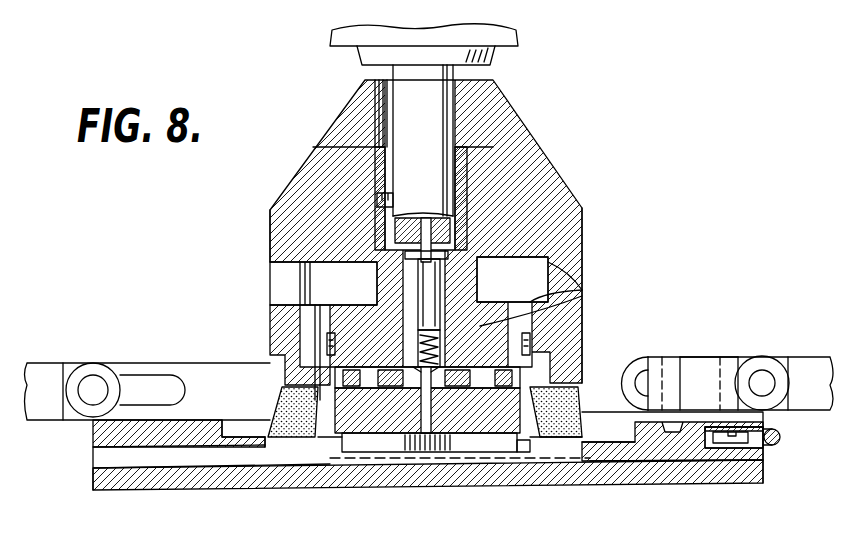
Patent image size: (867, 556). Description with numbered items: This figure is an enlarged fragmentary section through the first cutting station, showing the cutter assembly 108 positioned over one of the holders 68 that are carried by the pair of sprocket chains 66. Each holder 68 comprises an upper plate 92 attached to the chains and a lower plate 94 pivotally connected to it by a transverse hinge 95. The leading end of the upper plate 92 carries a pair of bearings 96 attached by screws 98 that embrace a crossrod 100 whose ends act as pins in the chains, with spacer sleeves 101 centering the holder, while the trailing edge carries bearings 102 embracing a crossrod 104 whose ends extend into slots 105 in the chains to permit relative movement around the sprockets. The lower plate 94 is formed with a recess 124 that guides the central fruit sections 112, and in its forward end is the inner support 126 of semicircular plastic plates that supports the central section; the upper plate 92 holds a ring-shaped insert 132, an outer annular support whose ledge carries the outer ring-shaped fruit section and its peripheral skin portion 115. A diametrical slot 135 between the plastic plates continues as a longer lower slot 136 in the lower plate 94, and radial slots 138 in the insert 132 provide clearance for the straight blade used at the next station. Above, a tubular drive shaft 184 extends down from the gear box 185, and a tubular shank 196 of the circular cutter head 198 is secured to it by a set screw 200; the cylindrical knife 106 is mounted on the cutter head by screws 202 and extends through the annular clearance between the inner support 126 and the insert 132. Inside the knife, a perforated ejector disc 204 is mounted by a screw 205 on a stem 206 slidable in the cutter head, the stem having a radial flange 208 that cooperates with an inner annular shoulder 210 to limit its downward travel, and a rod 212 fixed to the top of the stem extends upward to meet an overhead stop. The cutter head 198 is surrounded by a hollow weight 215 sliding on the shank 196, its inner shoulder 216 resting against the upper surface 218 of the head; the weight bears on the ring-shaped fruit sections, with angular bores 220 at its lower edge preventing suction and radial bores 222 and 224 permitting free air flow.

The sprocket chains 66 is at (42, 372).
The holder 68 is at (631, 452).
The upper plate 92 is at (112, 431).
The lower plate 94 is at (680, 470).
The transverse hinge 95 is at (781, 437).
The bearings 96 is at (744, 362).
The screws 98 is at (722, 368).
The crossrod 100 is at (762, 378).
The spacer sleeves 101 is at (804, 358).
The bearings 102 is at (72, 365).
The crossrod 104 is at (95, 383).
The slots 105 is at (148, 376).
The cylindrical knife 106 is at (342, 440).
The cutter assembly 108 is at (562, 165).
The central fruit section 112 is at (378, 420).
The peripheral skin portion 115 is at (287, 432).
The recess 124 is at (212, 457).
The inner support 126 is at (445, 458).
The ring-shaped insert 132 is at (251, 440).
The diametrical slot 135 is at (510, 445).
The lower slot 136 is at (353, 478).
The radial slots 138 is at (316, 440).
The tubular drive shaft 184 is at (447, 103).
The gear box 185 is at (505, 37).
The tubular shank 196 is at (462, 166).
The cutter head 198 is at (583, 308).
The set screw 200 is at (378, 196).
The screws 202 is at (316, 340).
The perforated ejector disc 204 is at (444, 462).
The screw 205 is at (417, 348).
The stem 206 is at (427, 310).
The radial flange 208 is at (449, 255).
The inner annular shoulder 210 is at (446, 322).
The rod 212 is at (422, 224).
The hollow weight 215 is at (567, 223).
The inner shoulder 216 is at (312, 250).
The upper surface 218 is at (583, 287).
The angular bores 220 is at (278, 363).
The radial bores 222 is at (282, 277).
The radial bores 224 is at (347, 134).